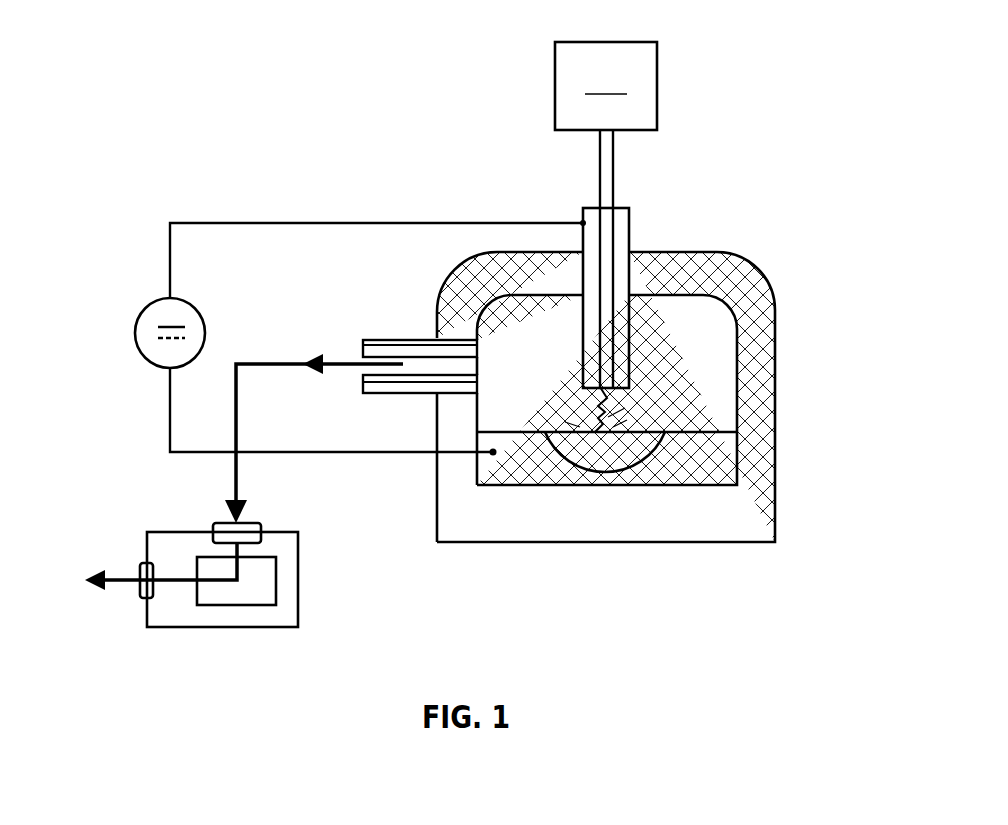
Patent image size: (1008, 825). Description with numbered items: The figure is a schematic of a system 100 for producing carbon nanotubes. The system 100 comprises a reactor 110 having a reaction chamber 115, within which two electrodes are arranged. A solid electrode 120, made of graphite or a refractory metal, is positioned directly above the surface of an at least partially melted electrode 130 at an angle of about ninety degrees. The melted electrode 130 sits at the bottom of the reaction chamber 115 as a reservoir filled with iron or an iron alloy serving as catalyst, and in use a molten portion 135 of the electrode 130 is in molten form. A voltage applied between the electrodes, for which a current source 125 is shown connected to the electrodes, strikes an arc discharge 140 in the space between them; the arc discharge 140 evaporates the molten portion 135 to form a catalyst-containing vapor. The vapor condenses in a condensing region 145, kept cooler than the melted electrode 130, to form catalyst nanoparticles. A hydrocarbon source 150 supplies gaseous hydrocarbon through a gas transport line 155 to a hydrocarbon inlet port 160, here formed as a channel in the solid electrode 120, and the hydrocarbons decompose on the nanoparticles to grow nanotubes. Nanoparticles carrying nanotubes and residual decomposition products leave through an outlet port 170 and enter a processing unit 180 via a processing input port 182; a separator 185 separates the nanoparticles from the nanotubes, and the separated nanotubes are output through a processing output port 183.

The system 100 is at (172, 145).
The reactor 110 is at (753, 295).
The reaction chamber 115 is at (695, 347).
The solid electrode 120 is at (582, 209).
The power supply 125 is at (136, 336).
The at least partially melted electrode 130 is at (537, 462).
The molten portion 135 is at (618, 453).
The arc discharge 140 is at (625, 405).
The condensing region 145 is at (568, 396).
The hydrocarbon source 150 is at (606, 86).
The gas transport line 155 is at (598, 158).
The hydrocarbon inlet port 160 is at (608, 233).
The outlet port 170 is at (377, 340).
The processing unit 180 is at (158, 558).
The processing input port 182 is at (213, 523).
The processing output port 183 is at (143, 593).
The separator 185 is at (250, 607).